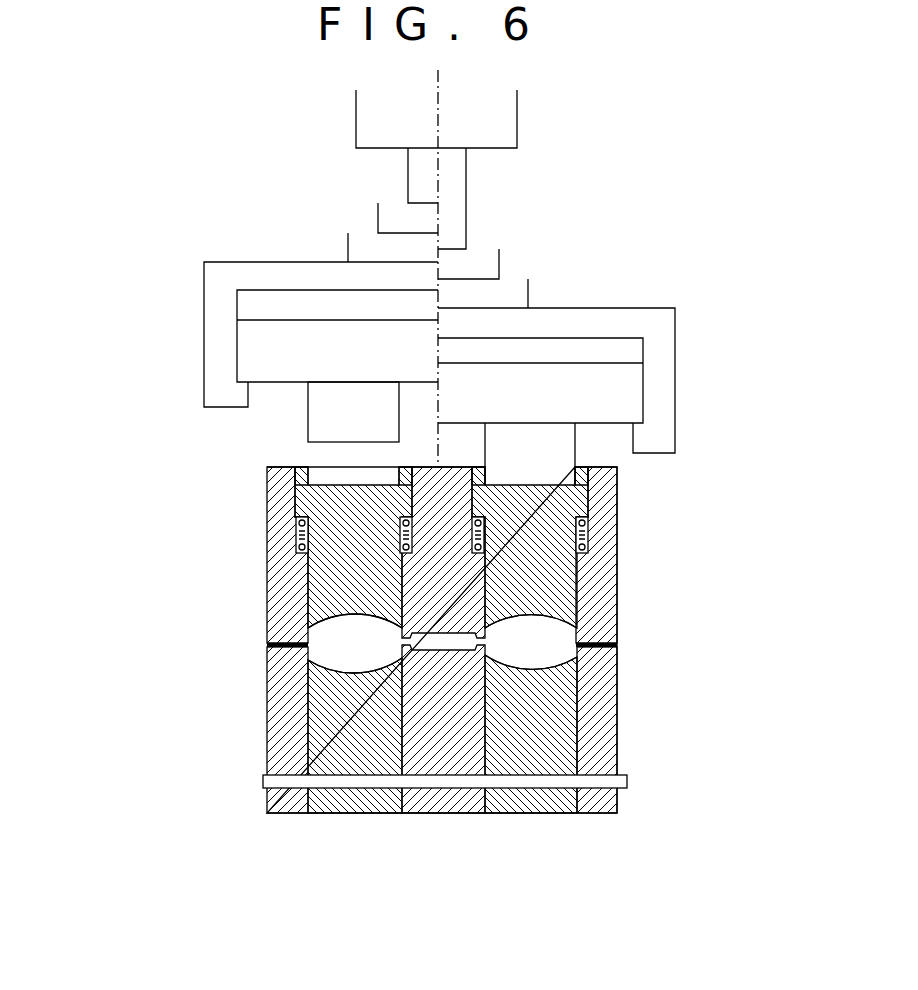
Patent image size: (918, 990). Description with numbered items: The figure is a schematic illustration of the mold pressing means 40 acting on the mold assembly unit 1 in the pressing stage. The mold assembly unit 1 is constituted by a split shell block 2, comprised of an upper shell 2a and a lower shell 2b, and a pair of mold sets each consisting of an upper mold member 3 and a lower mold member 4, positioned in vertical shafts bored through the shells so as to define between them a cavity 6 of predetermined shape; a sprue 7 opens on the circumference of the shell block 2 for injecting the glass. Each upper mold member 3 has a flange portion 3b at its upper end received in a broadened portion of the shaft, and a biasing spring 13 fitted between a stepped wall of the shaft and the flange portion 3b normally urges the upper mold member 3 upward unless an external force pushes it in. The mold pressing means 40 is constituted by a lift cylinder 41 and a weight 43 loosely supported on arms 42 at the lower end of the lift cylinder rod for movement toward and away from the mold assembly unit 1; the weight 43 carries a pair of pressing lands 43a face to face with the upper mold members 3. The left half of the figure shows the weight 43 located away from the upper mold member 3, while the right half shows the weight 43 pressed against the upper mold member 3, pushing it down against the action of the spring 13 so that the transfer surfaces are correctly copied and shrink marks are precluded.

The mold assembly unit 1 is at (627, 693).
The split shell block 2 is at (265, 712).
The upper shell 2a is at (270, 563).
The lower shell 2b is at (285, 760).
The upper mold member 3 is at (340, 568).
The flange portion 3b is at (295, 497).
The lower mold member 4 is at (362, 760).
The cavity 6 is at (360, 642).
The sprue 7 is at (443, 648).
The biasing spring 13 is at (290, 548).
The mold pressing means 40 is at (535, 128).
The lift cylinder 41 is at (375, 130).
The arms 42 is at (215, 348).
The weight 43 is at (293, 337).
The pressing lands 43a is at (335, 408).